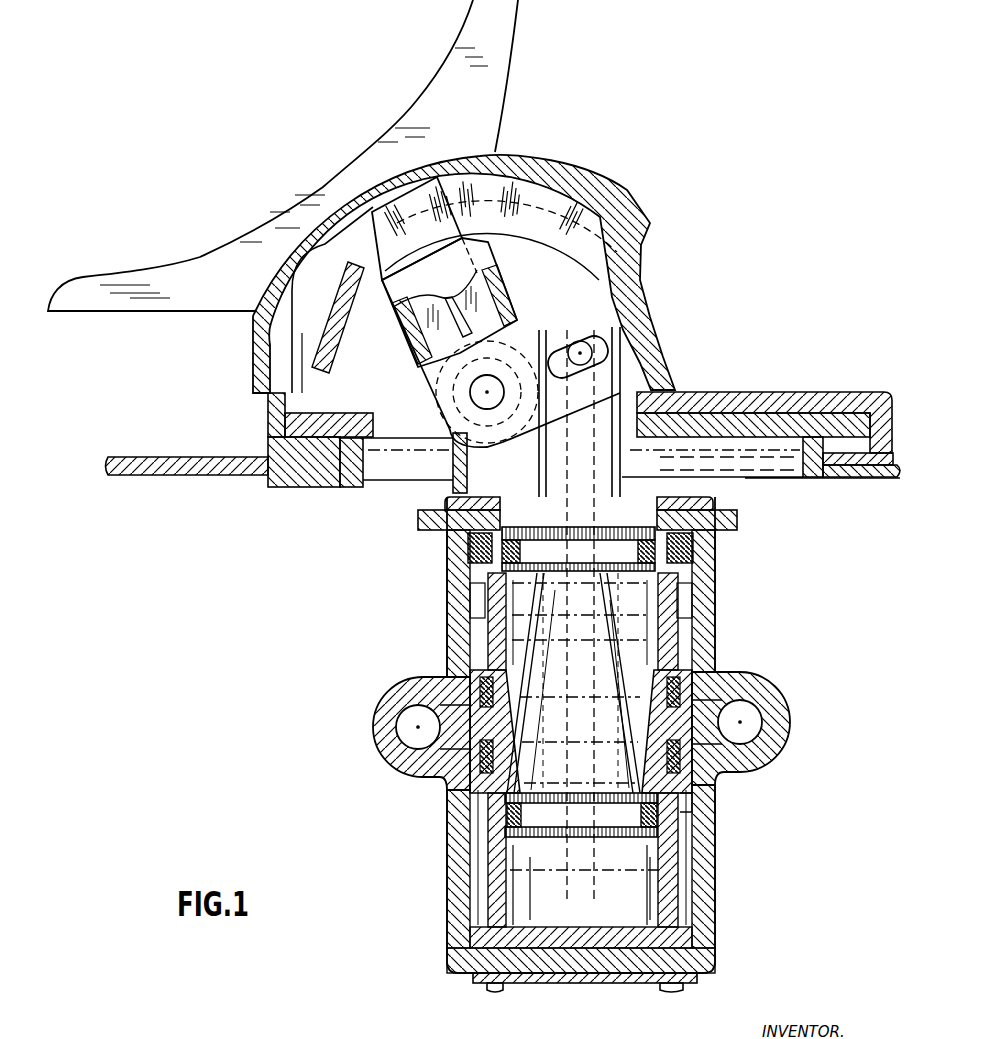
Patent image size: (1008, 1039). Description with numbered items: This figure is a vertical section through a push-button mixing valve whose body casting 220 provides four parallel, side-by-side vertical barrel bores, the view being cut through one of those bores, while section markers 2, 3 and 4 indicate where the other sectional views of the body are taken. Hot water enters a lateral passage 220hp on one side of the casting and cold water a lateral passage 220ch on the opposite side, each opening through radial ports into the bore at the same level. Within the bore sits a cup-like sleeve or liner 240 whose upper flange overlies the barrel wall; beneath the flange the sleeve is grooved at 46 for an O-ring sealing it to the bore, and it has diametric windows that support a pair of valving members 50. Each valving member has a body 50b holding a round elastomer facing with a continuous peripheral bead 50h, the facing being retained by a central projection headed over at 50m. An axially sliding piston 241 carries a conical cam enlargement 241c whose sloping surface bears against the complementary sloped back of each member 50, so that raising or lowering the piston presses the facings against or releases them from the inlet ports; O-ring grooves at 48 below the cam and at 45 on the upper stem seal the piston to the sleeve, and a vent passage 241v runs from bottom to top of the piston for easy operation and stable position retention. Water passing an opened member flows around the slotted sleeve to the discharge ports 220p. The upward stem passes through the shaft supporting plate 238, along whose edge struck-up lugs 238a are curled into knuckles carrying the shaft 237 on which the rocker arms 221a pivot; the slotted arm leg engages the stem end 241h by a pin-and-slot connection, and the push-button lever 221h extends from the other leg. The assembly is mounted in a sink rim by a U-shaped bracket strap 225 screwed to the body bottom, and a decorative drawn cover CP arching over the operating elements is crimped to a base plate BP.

The lever arm / handle 221h is at (380, 134).
The push-button rocker arm 221a is at (508, 306).
The main decorative drawn cover CP is at (640, 286).
The shaft bracket hole 241h is at (585, 355).
The axially sliding operator plunger or piston 241 is at (627, 450).
The shaft 237 is at (478, 388).
The lugs 238a is at (417, 413).
The base plate BP is at (740, 418).
The bracket strap 225 is at (687, 460).
The vent passage 241v is at (447, 487).
The shaft supporting plate stamping 238 is at (733, 503).
The circumferential groove 45 is at (653, 568).
The circumferential groove 46 is at (475, 548).
The body casting 220 is at (435, 619).
The valving member supporting sleeve or cup-like liner 240 is at (470, 814).
The valving member 50 is at (690, 658).
The body 50b is at (497, 678).
The continuous peripheral bead 50h is at (493, 700).
The headed-over central projection 50m is at (482, 697).
The hot lateral passage 220hp is at (415, 742).
The housing right ear with hole 220ch is at (747, 712).
The circumferential groove 48 is at (660, 829).
The cam enlargement 241c is at (683, 803).
The discharge ports 220p is at (553, 836).
The section line 2- 2 is at (748, 475).
The section line 3- 3 is at (838, 732).
The section line 4- 4 is at (770, 895).